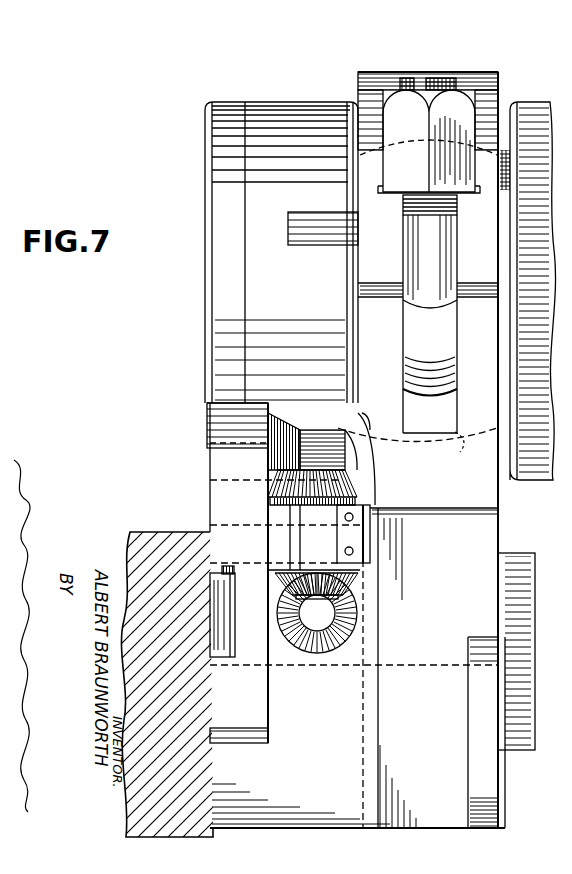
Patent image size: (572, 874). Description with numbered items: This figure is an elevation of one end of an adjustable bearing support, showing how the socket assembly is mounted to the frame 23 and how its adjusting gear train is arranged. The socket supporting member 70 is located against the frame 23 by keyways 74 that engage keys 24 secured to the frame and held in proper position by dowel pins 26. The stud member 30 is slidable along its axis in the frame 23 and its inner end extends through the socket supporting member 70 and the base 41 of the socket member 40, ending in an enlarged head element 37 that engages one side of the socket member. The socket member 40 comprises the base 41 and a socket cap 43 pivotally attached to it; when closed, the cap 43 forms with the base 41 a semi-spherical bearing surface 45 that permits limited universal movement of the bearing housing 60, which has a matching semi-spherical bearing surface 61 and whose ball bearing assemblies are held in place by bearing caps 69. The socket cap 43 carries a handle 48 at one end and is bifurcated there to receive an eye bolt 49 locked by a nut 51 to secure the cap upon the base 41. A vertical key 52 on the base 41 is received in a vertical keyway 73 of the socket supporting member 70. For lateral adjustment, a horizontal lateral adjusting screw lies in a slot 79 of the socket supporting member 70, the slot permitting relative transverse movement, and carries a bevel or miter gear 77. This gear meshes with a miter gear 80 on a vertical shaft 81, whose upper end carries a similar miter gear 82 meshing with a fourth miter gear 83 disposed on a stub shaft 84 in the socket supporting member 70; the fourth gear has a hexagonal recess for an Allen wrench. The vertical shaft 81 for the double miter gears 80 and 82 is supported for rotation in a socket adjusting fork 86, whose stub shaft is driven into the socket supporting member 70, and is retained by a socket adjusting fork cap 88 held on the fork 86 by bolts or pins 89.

The frame 23 is at (138, 538).
The keys 24 is at (222, 658).
The dowel pins 26 is at (232, 570).
The stud member 30 is at (390, 670).
The enlarged head element 37 is at (512, 752).
The socket member 40 is at (507, 528).
The base portion 41 is at (460, 793).
The socket cap 43 is at (498, 76).
The semi-spherical bearing surface 45 is at (417, 450).
The handle 48 is at (304, 215).
The eye bolt 49 is at (400, 104).
The nut 51 is at (385, 104).
The vertical key 52 is at (372, 445).
The bearing housing 60 is at (263, 108).
The semi-spherical bearing surface 61 is at (445, 444).
The bearing caps 69 is at (207, 110).
The socket supporting member 70 is at (215, 416).
The vertical keyway 73 is at (378, 714).
The keyways 74 is at (236, 650).
The bevel or miter gear 77 is at (357, 624).
The slot 79 is at (358, 594).
The miter gear 80 is at (358, 581).
The vertical shaft 81 is at (268, 515).
The miter gear 82 is at (348, 490).
The fourth miter gear 83 is at (268, 463).
The stub shaft 84 is at (212, 443).
The socket adjusting fork 86 is at (268, 535).
The socket adjusting fork cap 88 is at (370, 522).
The bolts or pins 89 is at (353, 515).